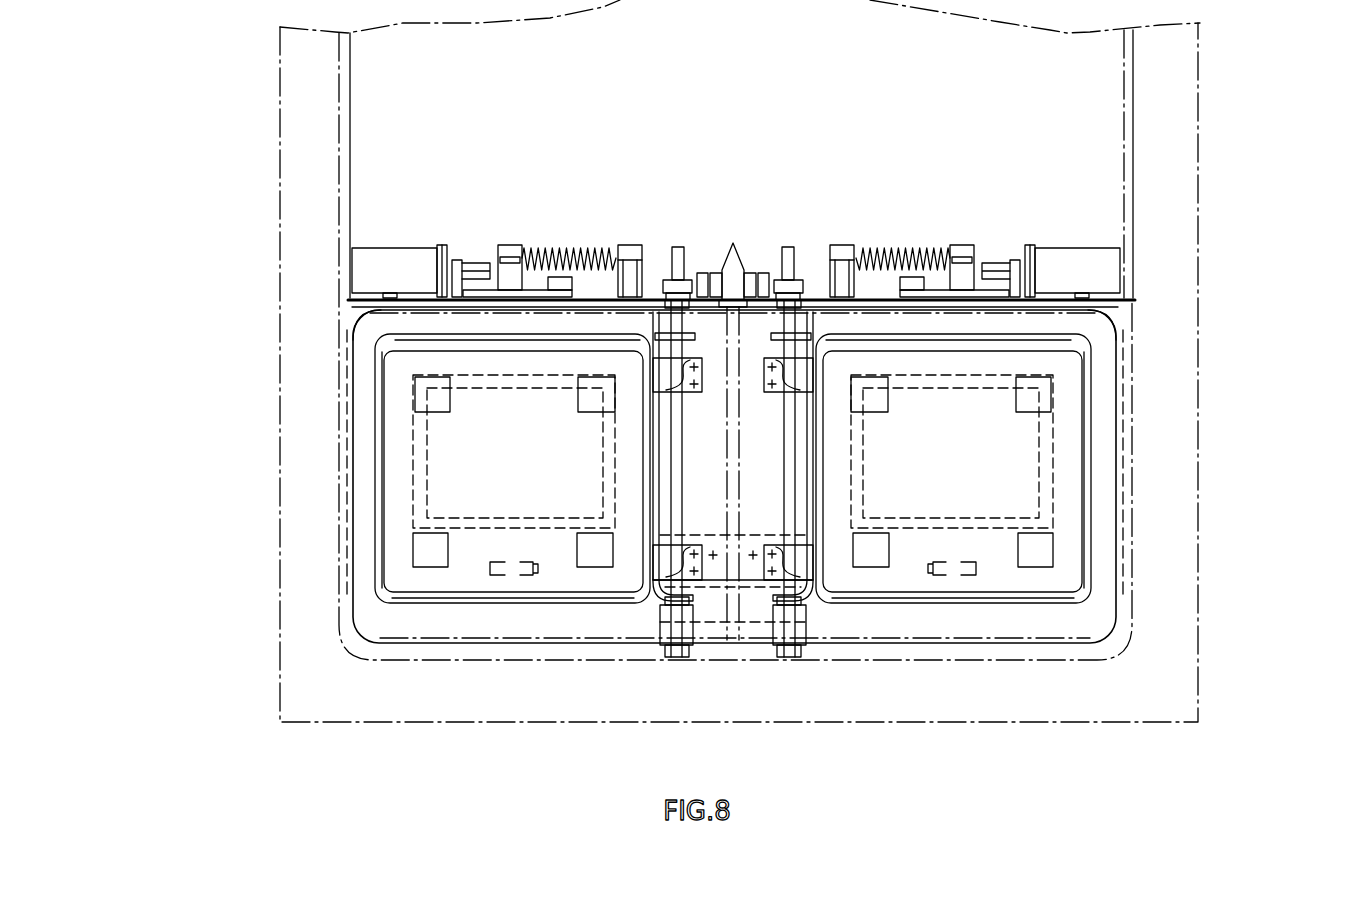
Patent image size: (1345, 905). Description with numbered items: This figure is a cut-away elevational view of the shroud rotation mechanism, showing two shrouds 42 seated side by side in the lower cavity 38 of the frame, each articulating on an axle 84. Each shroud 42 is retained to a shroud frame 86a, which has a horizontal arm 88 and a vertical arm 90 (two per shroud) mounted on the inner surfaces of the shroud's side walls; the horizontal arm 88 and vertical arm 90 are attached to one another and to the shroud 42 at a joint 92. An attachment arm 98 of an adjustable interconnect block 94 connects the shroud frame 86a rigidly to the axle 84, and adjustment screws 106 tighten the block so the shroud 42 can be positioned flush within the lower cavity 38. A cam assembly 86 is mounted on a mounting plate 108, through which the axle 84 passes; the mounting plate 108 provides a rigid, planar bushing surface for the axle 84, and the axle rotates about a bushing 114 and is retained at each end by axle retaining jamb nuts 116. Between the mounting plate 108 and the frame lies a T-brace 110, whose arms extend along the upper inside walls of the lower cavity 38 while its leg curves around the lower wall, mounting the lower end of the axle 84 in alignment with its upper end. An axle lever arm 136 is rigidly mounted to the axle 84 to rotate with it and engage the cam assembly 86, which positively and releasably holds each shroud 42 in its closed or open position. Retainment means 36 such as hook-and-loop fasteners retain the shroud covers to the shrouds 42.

The retainment means 36 is at (436, 394).
The lower cavity 38 is at (353, 645).
The shroud 42 is at (368, 525).
The axle 84 is at (677, 248).
The cam assembly 86 is at (495, 216).
The shroud frame 86a is at (608, 602).
The horizontal arm 88 is at (578, 605).
The vertical arm 90 is at (660, 597).
The joint 92 is at (690, 660).
The adjustable interconnect block 94 is at (662, 362).
The attachment arm 98 is at (668, 580).
The adjustment screws 106 is at (732, 243).
The mounting plate 108 is at (348, 298).
The T-brace 110 is at (352, 311).
The bushing 114 is at (685, 255).
The axle retaining jamb nuts 116 is at (663, 296).
The axle lever arm 136 is at (732, 265).